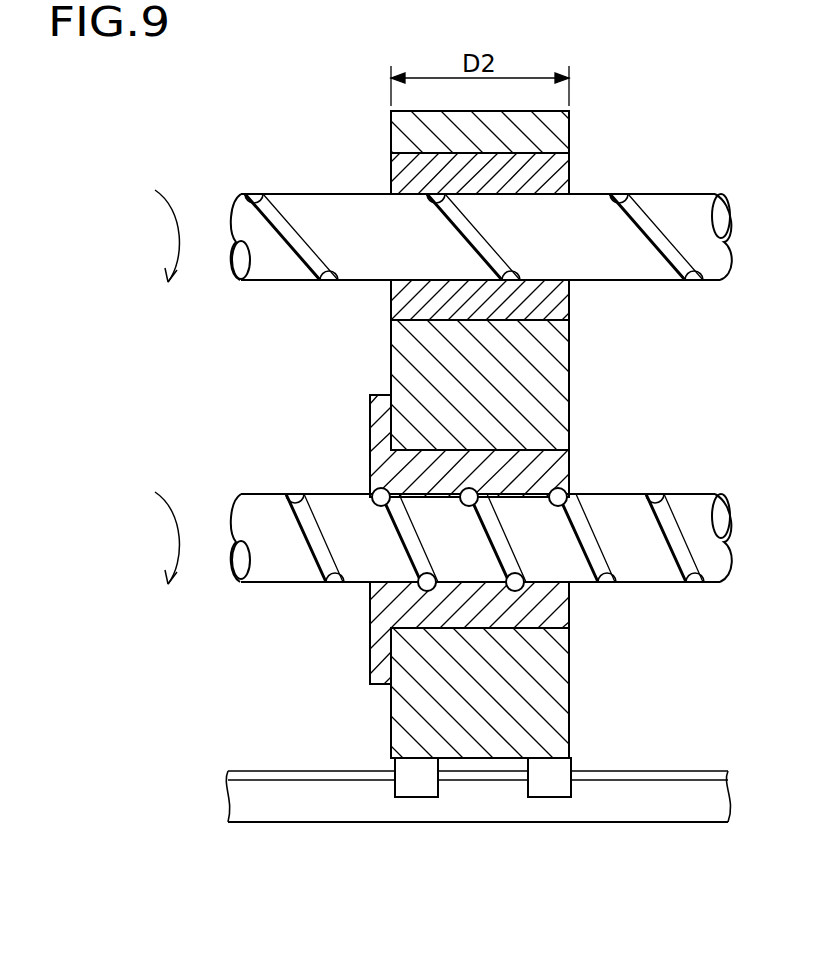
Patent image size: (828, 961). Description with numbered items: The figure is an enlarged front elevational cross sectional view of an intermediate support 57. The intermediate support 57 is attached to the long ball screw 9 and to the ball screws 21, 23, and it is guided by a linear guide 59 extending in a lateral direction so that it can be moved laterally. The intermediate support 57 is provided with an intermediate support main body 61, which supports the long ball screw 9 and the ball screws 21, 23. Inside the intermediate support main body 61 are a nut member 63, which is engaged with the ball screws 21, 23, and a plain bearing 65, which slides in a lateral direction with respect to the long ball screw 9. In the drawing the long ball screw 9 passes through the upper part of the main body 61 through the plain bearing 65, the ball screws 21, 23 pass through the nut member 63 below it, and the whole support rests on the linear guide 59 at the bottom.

The long ball screw 9 is at (303, 202).
The intermediate support 57 is at (640, 145).
The plain bearing 65 is at (398, 180).
The intermediate support main body 61 is at (570, 368).
The nut member 63 is at (380, 470).
The ball screw 21 is at (614, 510).
The ball screw 23 is at (481, 539).
The linear guide 59 is at (280, 807).